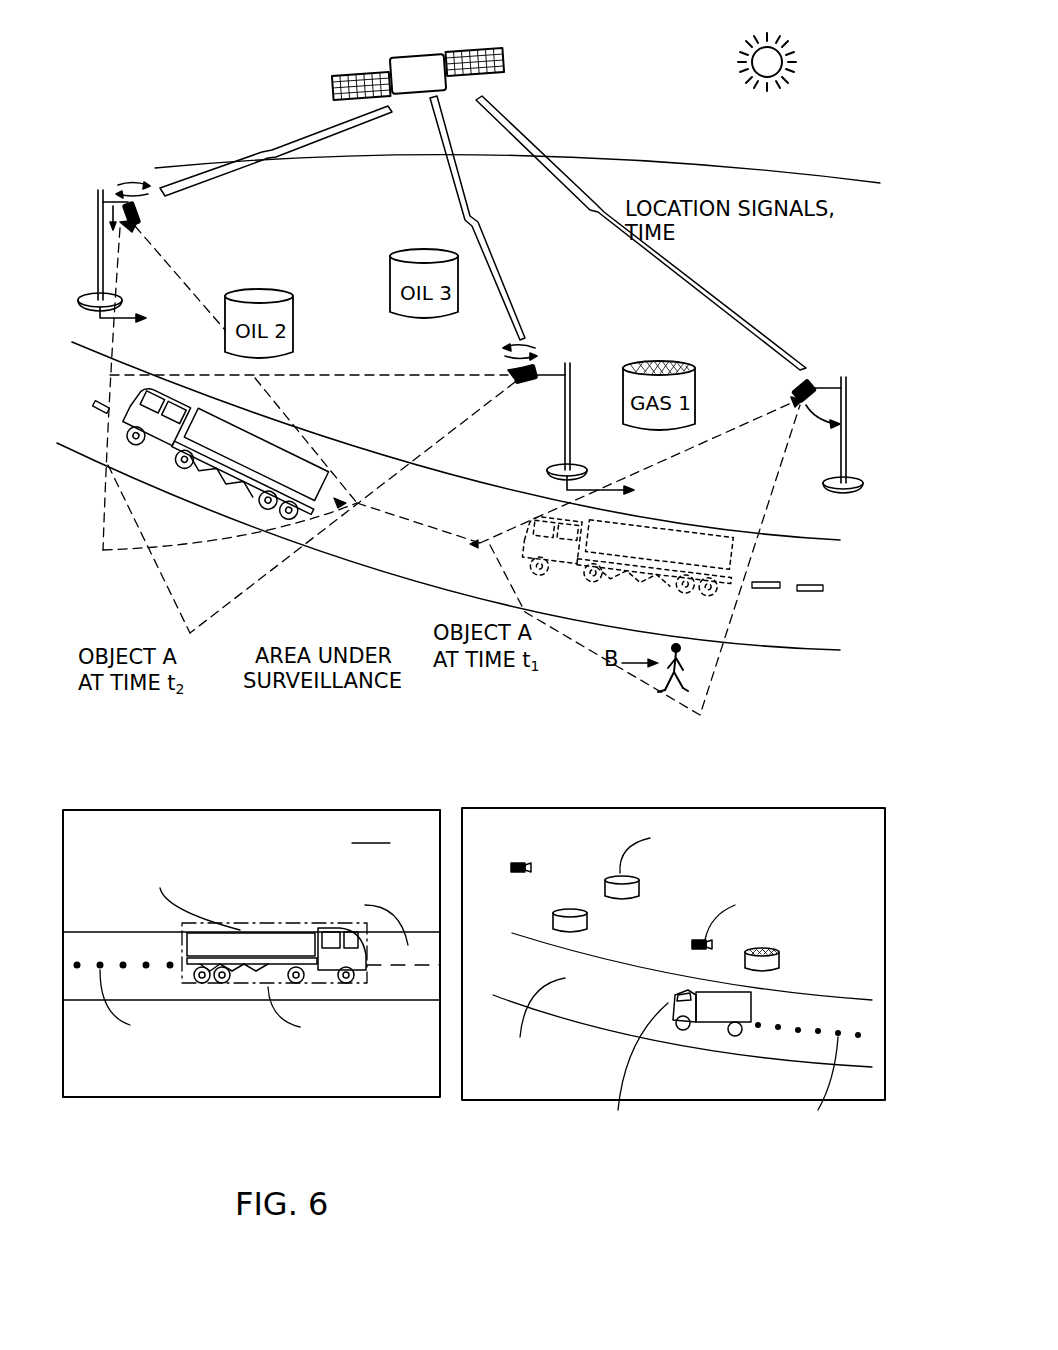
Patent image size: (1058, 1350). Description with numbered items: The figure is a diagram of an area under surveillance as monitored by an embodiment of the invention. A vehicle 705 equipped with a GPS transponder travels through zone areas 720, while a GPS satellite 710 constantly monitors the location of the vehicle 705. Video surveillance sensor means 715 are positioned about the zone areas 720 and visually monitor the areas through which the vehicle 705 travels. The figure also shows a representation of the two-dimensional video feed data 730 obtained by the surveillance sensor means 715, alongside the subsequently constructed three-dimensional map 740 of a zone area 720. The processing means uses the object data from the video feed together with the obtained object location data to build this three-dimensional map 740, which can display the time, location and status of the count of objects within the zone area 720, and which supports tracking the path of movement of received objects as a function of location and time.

The vehicle 705 is at (216, 420).
The GPS satellite 710 is at (422, 55).
The video surveillance sensor means 715 is at (99, 214).
The zone area 720 is at (425, 408).
The 2D video feed data 730 is at (336, 808).
The 3D map 740 is at (832, 808).